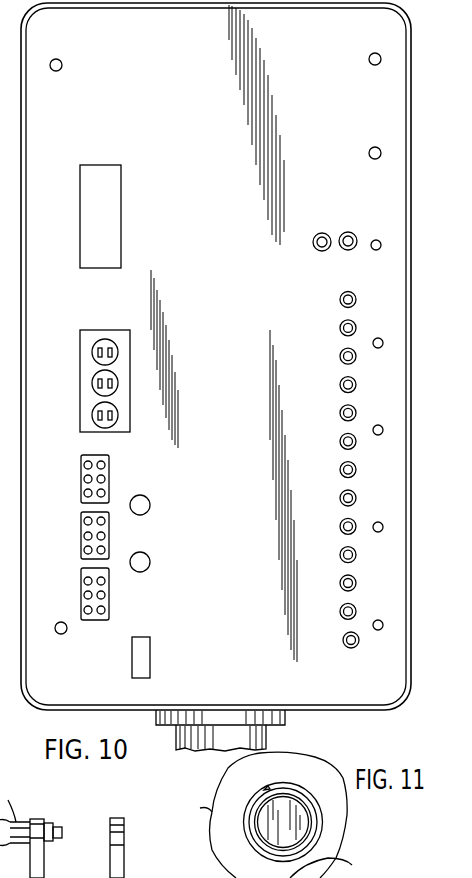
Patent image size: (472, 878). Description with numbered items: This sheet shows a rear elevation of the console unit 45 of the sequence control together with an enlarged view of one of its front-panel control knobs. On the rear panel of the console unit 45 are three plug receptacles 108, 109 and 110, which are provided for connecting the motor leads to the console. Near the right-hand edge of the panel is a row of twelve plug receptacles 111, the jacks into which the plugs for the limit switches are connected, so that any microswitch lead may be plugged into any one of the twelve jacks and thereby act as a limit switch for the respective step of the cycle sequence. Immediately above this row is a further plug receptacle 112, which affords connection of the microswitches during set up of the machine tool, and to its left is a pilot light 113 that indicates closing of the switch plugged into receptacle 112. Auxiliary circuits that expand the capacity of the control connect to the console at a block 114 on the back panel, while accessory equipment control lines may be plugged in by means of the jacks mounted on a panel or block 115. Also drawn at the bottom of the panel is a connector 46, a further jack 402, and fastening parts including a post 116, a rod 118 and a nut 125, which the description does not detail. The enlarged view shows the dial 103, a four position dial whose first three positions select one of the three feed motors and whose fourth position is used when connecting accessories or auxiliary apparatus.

In FIG. 10, the console unit 45 is at (312, 708).
In FIG. 10, the connector 46 is at (256, 736).
In FIG. 10, the plug receptacle 108 is at (81, 487).
In FIG. 10, the plug receptacle 109 is at (81, 548).
In FIG. 10, the plug receptacle 110 is at (81, 603).
In FIG. 10, the plug receptacles 111 is at (356, 303).
In FIG. 10, the plug receptacle 112 is at (358, 229).
In FIG. 10, the pilot light 113 is at (314, 236).
In FIG. 10, the block 114 is at (121, 240).
In FIG. 10, the panel or block 115 is at (80, 330).
In FIG. 10, the jack 402 is at (357, 647).
In FIG. 11, the dial 103 is at (208, 808).
In FIG. 11, the support post 116 is at (44, 868).
In FIG. 11, the rod 118 is at (124, 855).
In FIG. 11, the nut 125 is at (56, 826).